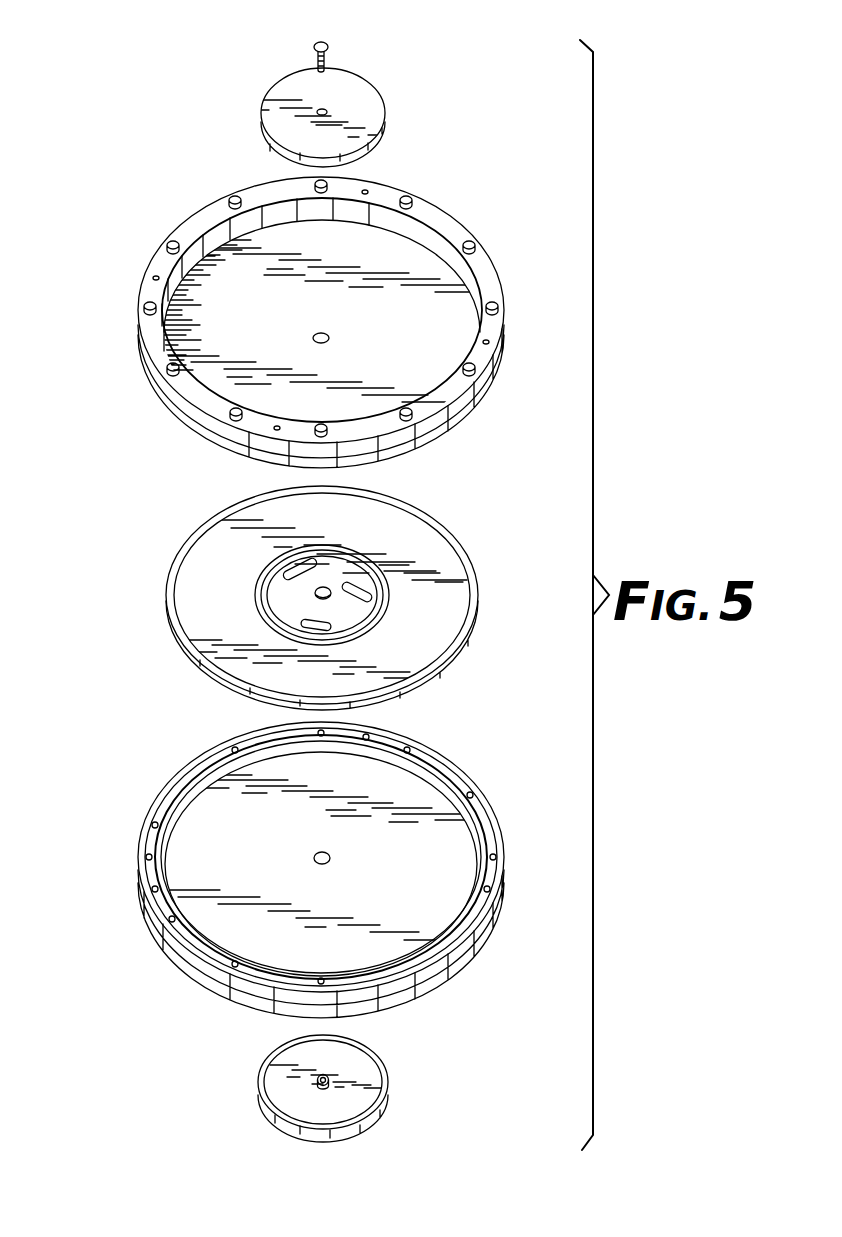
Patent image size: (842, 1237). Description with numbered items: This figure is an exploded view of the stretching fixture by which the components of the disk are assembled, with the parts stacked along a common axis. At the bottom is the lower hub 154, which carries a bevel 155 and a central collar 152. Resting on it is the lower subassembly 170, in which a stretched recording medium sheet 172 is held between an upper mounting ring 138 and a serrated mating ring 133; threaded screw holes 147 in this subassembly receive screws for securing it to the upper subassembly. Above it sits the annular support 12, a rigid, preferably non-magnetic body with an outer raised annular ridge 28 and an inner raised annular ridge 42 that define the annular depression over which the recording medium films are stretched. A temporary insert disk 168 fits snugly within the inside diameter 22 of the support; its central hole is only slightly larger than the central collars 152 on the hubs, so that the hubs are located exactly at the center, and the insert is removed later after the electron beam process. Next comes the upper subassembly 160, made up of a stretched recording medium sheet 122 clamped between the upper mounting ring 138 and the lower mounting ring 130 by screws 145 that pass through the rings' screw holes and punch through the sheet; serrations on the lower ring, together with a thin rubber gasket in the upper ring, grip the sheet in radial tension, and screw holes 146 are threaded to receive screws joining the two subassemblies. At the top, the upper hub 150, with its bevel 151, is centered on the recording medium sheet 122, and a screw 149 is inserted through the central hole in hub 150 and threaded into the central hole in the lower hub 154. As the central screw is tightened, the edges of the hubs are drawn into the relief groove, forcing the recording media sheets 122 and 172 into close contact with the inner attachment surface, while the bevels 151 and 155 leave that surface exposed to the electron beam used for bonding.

The annular support 12 is at (190, 536).
The inside diameter 22 is at (313, 558).
The outer raised annular ridge 28 is at (205, 662).
The inner raised annular ridge 42 is at (264, 578).
The recording medium sheet 122 is at (200, 297).
The lower mounting ring 130 is at (463, 422).
The mating ring 133 is at (183, 945).
The upper mounting ring 138 is at (192, 412).
The screws 145 is at (202, 185).
The screw holes 146 is at (368, 190).
The screw holes 147 is at (367, 733).
The screw 149 is at (328, 58).
The upper hub 150 is at (367, 97).
The bevel 151 is at (260, 127).
The central collar 152 is at (316, 1080).
The lower hub 154 is at (388, 1084).
The bevel 155 is at (357, 1133).
The upper subassembly 160 is at (515, 240).
The temporary insert disk 168 is at (338, 570).
The lower subassembly 170 is at (496, 937).
The recording medium sheet 172 is at (217, 792).